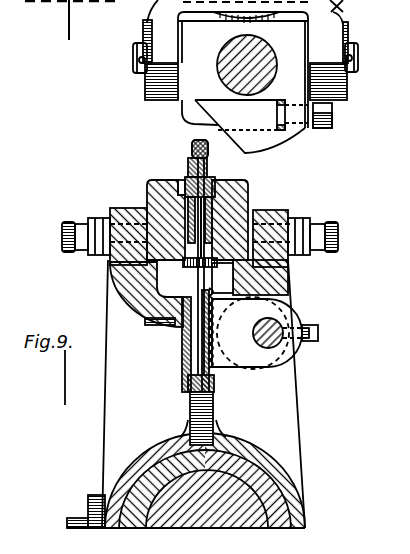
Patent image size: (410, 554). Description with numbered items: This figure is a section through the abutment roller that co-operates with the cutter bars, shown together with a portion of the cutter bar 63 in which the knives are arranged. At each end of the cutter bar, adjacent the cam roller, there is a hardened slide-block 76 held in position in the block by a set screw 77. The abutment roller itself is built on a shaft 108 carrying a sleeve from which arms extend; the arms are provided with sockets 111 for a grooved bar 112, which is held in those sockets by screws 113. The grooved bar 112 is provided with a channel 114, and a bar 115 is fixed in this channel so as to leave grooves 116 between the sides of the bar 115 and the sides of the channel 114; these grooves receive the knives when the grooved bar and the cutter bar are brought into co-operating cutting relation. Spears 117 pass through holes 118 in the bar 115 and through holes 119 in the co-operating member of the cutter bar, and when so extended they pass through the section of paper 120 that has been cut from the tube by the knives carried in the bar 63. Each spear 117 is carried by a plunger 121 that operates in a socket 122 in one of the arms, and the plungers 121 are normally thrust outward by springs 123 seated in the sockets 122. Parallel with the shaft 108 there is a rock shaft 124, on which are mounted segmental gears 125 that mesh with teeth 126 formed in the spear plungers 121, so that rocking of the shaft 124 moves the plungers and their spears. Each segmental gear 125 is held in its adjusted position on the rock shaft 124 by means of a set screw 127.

The bar 63 is at (188, 100).
The hardened slide-block 76 is at (290, 140).
The set screw 77 is at (334, 117).
The shaft 108 is at (233, 513).
The sockets 111 is at (150, 222).
The grooved bar 112 is at (258, 213).
The screws 113 is at (328, 228).
The channel 114 is at (236, 196).
The bar 115 is at (208, 197).
The grooves 116 is at (185, 181).
The spears 117 is at (206, 192).
The holes 118 is at (178, 186).
The holes 119 is at (190, 158).
The section of paper 120 is at (188, 163).
The plunger 121 is at (197, 286).
The socket 122 is at (300, 262).
The springs 123 is at (188, 410).
The rock shaft 124 is at (270, 325).
The segmental gears 125 is at (284, 321).
The teeth 126 is at (206, 308).
The set screw 127 is at (312, 340).